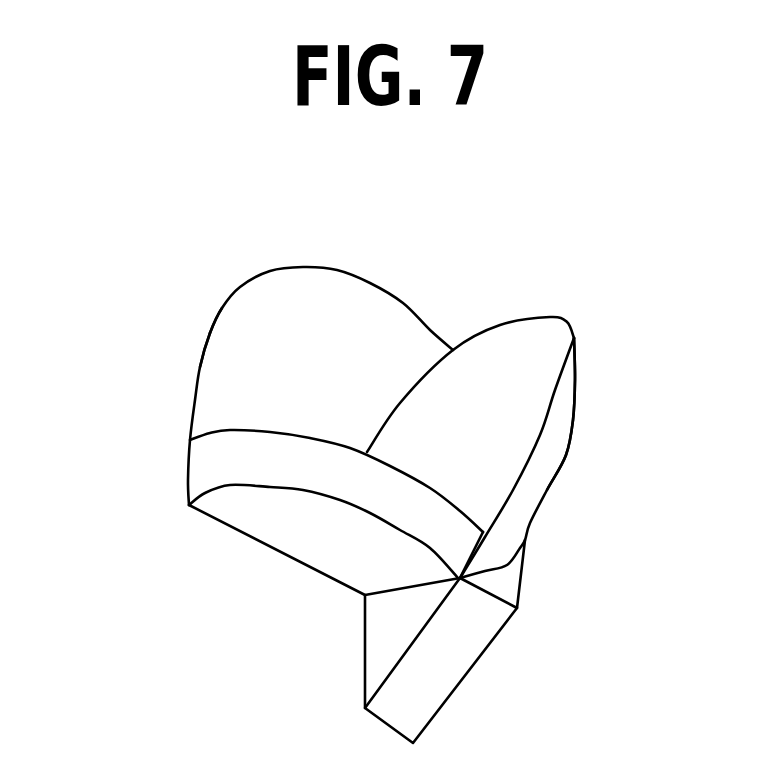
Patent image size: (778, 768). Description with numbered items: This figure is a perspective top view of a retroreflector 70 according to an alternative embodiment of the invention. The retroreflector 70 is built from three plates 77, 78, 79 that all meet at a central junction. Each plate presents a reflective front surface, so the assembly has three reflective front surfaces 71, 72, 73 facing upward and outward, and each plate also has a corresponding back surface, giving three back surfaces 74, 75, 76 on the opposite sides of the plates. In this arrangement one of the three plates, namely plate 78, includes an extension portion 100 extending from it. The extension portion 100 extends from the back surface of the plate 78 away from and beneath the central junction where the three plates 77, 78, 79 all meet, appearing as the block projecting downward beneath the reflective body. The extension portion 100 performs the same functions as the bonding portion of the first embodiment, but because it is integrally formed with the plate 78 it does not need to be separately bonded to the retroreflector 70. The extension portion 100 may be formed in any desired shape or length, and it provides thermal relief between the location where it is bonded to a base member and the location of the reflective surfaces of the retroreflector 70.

The retroreflector 70 is at (586, 432).
The reflective front surface 71 is at (533, 315).
The reflective front surface 72 is at (507, 507).
The reflective front surface 73 is at (320, 317).
The back surface 74 is at (578, 390).
The back surface 75 is at (230, 478).
The back surface 76 is at (210, 333).
The plate 77 is at (547, 453).
The plate 78 is at (300, 571).
The plate 79 is at (186, 374).
The extension portion 100 is at (527, 652).